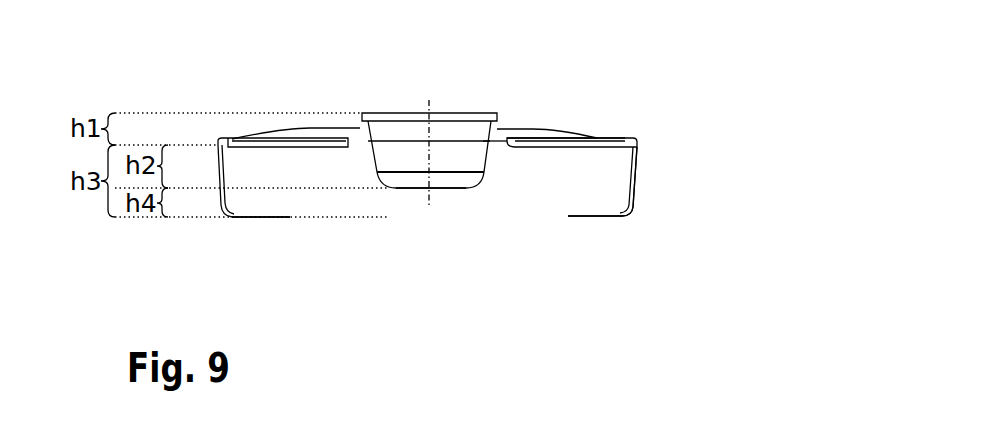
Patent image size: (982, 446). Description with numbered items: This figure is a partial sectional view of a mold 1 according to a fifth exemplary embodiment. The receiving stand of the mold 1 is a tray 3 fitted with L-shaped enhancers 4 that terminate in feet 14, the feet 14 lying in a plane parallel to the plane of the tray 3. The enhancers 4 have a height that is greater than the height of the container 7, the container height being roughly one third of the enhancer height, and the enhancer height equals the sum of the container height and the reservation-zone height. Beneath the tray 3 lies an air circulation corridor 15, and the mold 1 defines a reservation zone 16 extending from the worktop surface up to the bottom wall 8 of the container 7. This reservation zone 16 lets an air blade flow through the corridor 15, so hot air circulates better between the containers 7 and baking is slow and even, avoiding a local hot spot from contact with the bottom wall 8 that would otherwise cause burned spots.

The mold 1 is at (240, 96).
The tray 3 is at (597, 137).
The L-shaped enhancer 4 is at (638, 176).
The container 7 is at (435, 130).
The bottom wall 8 is at (455, 188).
The foot 14 is at (603, 217).
The air circulation corridor 15 is at (553, 177).
The reservation zone 16 is at (400, 205).